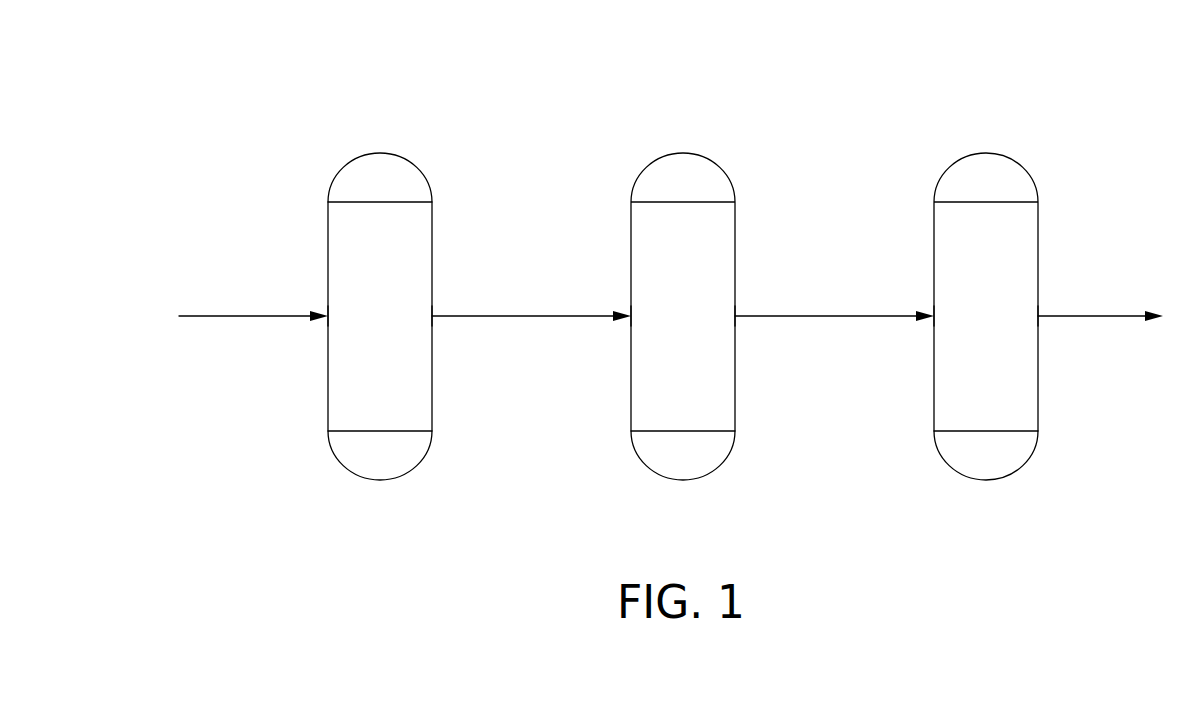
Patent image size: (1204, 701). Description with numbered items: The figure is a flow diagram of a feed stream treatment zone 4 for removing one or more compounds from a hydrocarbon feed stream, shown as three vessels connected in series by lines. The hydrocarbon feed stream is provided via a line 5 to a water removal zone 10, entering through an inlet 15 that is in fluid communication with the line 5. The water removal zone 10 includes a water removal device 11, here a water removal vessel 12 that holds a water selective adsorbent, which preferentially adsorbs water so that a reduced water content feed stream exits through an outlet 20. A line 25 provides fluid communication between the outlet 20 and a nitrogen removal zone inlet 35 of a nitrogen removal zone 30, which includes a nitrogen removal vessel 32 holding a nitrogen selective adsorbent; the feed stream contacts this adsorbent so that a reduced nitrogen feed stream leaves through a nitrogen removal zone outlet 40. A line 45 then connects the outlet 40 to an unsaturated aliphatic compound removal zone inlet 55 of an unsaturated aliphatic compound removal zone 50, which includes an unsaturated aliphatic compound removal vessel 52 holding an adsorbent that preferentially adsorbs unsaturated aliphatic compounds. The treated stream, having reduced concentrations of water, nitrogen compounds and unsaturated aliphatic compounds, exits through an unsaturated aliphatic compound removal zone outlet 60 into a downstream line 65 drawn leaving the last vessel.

The feed stream treatment zone 4 is at (1128, 65).
The line 5 is at (200, 314).
The water removal zone 10 is at (453, 177).
The water removal device 11 is at (318, 426).
The water removal vessel 12 is at (327, 208).
The inlet 15 is at (318, 302).
The outlet 20 is at (443, 304).
The line 25 is at (532, 317).
The nitrogen removal zone 30 is at (753, 179).
The nitrogen removal vessel 32 is at (683, 480).
The nitrogen removal zone inlet 35 is at (621, 303).
The nitrogen removal zone outlet 40 is at (745, 304).
The line 45 is at (835, 317).
The unsaturated aliphatic compound removal zone 50 is at (1054, 179).
The unsaturated aliphatic compound removal vessel 52 is at (986, 480).
The unsaturated aliphatic compound removal zone inlet 55 is at (924, 304).
The unsaturated aliphatic compound removal zone outlet 60 is at (1048, 304).
The product stream 65 is at (1099, 318).